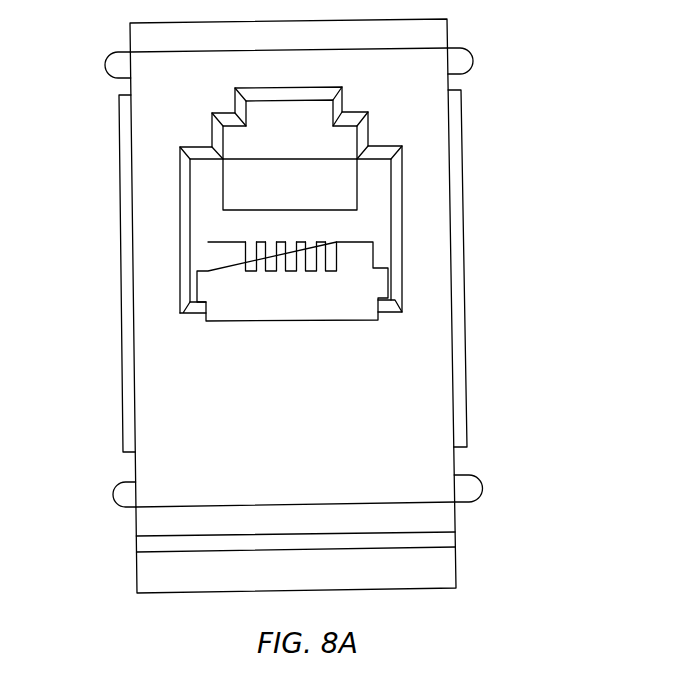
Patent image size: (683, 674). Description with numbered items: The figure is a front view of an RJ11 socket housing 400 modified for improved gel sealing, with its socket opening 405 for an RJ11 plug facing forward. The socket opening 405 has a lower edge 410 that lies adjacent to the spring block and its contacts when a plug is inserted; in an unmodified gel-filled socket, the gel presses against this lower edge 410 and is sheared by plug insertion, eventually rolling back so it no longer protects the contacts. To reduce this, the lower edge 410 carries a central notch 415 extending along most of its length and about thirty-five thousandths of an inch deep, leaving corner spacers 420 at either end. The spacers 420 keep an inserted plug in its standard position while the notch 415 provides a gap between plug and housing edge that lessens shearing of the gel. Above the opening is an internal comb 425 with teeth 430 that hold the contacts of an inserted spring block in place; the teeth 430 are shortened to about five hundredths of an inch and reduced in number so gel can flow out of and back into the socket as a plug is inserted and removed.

The RJ11 socket housing 400 is at (543, 200).
The socket opening 405 is at (403, 232).
The lower edge 410 is at (391, 315).
The central notch 415 is at (343, 321).
The corner spacers 420 is at (190, 314).
The internal comb 425 is at (207, 194).
The teeth 430 is at (240, 258).